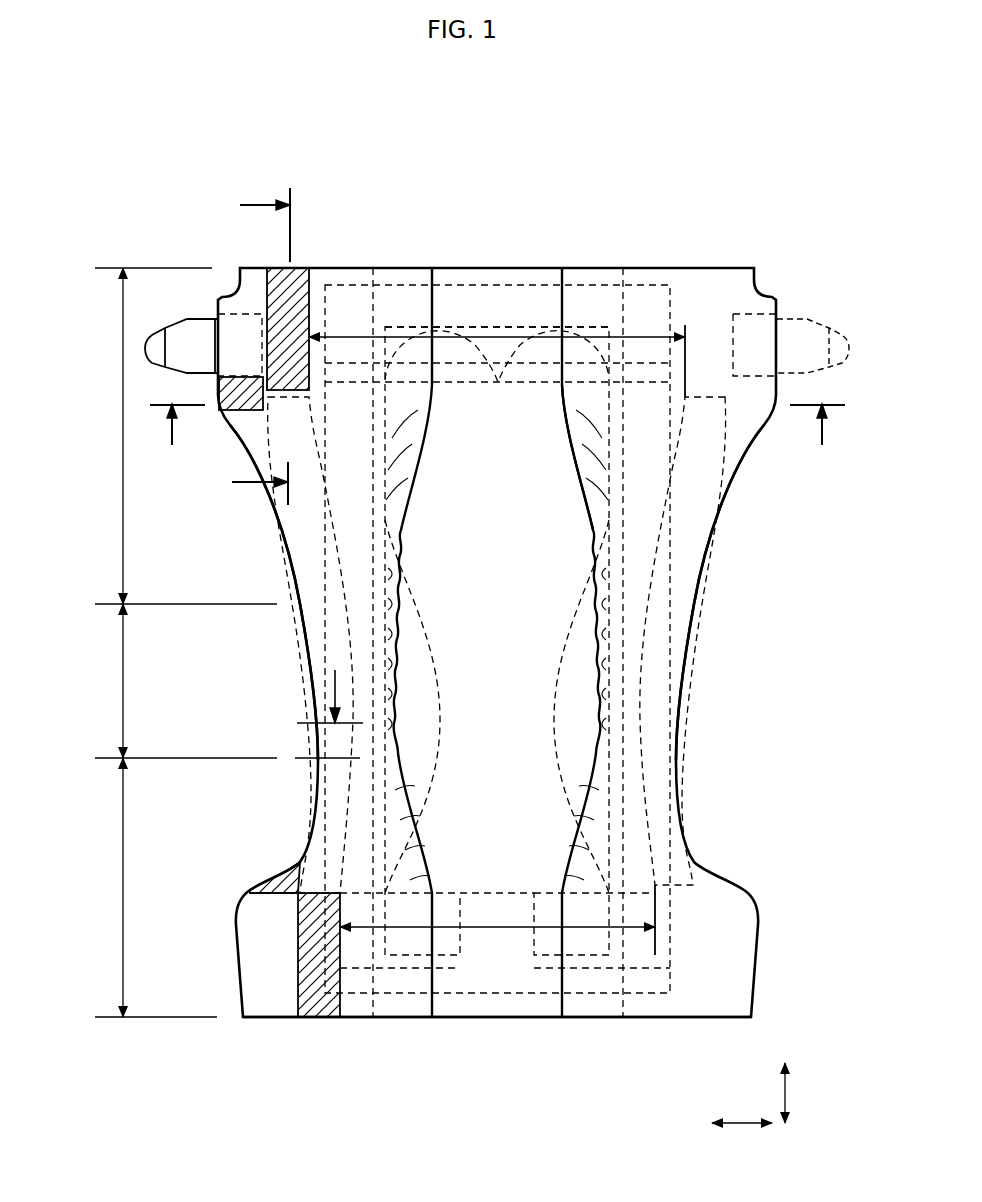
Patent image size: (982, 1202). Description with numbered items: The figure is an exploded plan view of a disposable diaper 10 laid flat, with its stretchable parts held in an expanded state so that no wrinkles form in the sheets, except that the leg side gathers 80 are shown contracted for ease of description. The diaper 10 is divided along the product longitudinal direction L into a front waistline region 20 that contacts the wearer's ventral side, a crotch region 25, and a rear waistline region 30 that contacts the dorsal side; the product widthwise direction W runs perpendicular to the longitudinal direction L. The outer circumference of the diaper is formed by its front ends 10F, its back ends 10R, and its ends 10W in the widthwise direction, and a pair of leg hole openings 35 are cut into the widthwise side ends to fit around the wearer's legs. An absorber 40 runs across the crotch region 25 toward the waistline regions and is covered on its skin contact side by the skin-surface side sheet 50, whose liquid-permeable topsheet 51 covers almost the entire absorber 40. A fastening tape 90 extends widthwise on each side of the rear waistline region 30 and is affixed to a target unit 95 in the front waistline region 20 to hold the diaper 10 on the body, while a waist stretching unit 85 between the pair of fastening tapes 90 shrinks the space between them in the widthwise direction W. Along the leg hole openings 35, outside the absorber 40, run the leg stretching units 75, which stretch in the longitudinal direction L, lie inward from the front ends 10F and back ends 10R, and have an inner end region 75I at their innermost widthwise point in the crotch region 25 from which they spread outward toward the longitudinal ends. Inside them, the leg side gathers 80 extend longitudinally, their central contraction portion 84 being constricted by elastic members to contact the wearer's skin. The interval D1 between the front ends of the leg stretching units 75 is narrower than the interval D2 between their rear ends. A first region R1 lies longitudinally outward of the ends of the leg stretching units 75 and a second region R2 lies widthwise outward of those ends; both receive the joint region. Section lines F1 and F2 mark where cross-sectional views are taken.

The disposable diaper 10 is at (672, 250).
The back ends 10R is at (586, 268).
The front ends 10F is at (505, 1018).
The ends in the product widthwise direction 10W is at (218, 300).
The front waistline region 20 is at (122, 881).
The crotch region 25 is at (122, 663).
The rear waistline region 30 is at (122, 440).
The leg hole openings 35 is at (746, 458).
The absorber 40 is at (604, 718).
The skin-surface side sheet 50 is at (488, 870).
The topsheet 51 is at (505, 726).
The leg stretching units 75 is at (690, 838).
The inner end region in the widthwise direction 75I is at (333, 736).
The leg side gathers 80 is at (604, 690).
The contraction portion 84 is at (574, 468).
The waist stretching unit 85 is at (398, 300).
The fastening tape 90 is at (798, 312).
The target unit 95 is at (407, 968).
The interval between front ends of the leg stretching units D1 is at (338, 995).
The interval between rear ends of the leg stretching units D2 is at (462, 354).
The F1-F1 line F1 is at (496, 432).
The F2-F2 line F2 is at (244, 346).
The first region R1 is at (290, 330).
The second region R2 is at (240, 398).
The product longitudinal direction L is at (798, 1093).
The product widthwise direction W is at (742, 1140).